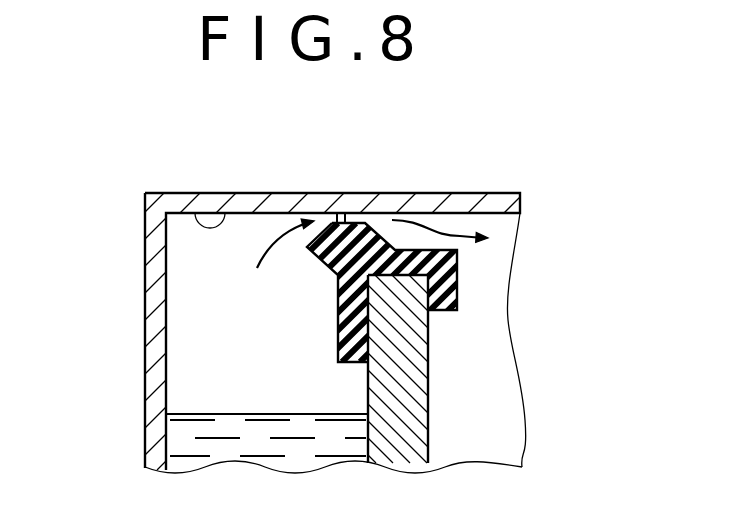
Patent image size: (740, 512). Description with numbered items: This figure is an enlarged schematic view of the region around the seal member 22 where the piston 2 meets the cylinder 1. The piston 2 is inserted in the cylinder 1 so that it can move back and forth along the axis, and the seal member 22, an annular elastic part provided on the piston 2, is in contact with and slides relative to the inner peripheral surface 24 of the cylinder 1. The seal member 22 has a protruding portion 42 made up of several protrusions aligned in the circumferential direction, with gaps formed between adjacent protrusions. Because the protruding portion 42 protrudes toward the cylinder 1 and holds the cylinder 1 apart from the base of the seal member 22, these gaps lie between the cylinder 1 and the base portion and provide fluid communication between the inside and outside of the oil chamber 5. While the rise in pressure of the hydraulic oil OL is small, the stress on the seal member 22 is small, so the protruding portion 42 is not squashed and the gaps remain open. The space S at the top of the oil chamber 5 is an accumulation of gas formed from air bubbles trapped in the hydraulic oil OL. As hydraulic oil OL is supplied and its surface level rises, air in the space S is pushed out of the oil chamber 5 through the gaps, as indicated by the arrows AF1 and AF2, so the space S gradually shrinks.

The cylinder 1 is at (150, 308).
The piston 2 is at (428, 424).
The oil chamber 5 is at (197, 375).
The seal member 22 is at (380, 245).
The inner peripheral surface 24 is at (196, 222).
The protruding portion 42 is at (340, 220).
The arrow AF1 is at (257, 222).
The arrow AF2 is at (452, 222).
The space S is at (197, 268).
The hydraulic oil OL is at (197, 445).